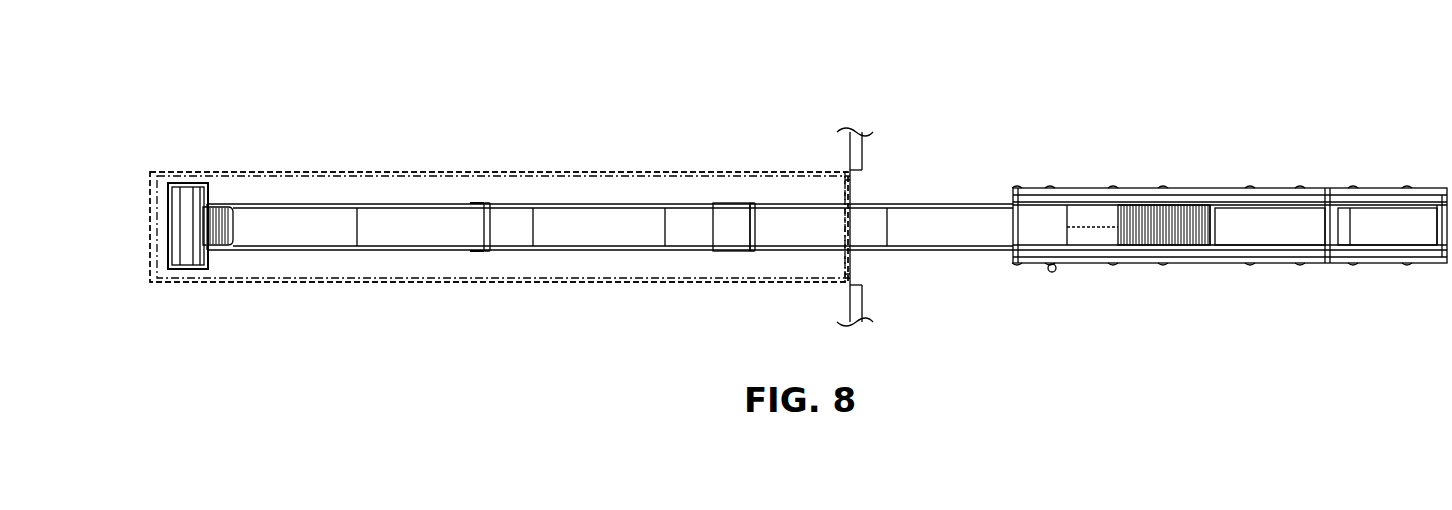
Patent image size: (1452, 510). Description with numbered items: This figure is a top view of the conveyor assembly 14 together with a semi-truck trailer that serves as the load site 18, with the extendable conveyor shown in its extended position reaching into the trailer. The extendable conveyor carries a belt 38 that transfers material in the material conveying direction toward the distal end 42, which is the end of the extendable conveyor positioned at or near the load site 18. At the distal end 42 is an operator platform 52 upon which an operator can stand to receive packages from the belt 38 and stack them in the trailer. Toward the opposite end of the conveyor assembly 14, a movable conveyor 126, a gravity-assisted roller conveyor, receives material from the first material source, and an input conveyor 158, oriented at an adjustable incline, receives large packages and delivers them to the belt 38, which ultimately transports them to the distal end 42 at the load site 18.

The conveyor assembly 14 is at (1403, 114).
The load site 18 is at (440, 174).
The belt 38 is at (963, 222).
The distal end 42 is at (131, 245).
The operator platform 52 is at (190, 220).
The movable conveyor 126 is at (1165, 206).
The input conveyor 158 is at (1390, 212).